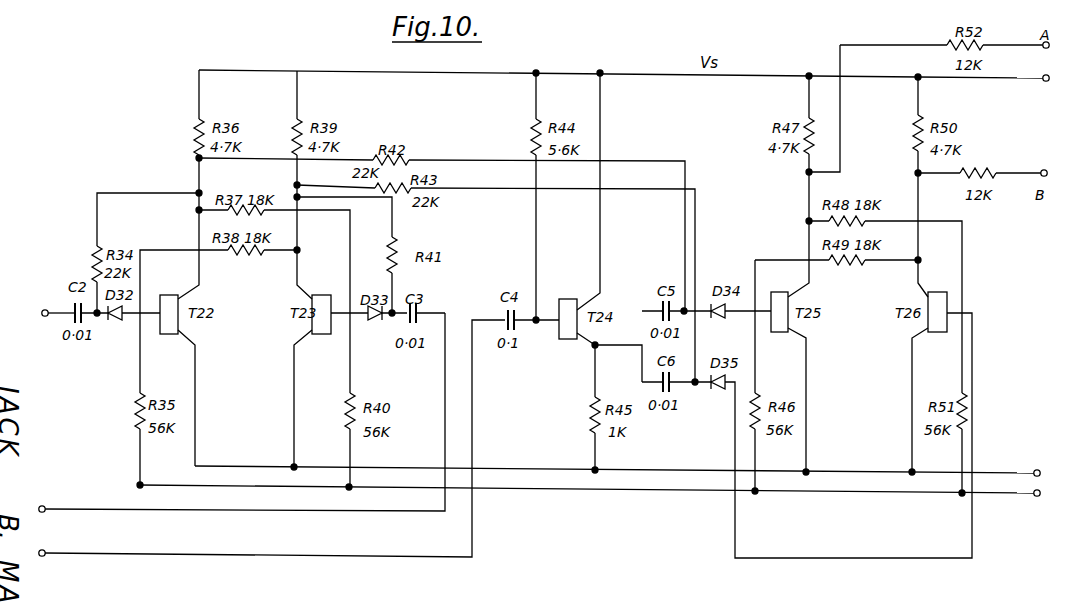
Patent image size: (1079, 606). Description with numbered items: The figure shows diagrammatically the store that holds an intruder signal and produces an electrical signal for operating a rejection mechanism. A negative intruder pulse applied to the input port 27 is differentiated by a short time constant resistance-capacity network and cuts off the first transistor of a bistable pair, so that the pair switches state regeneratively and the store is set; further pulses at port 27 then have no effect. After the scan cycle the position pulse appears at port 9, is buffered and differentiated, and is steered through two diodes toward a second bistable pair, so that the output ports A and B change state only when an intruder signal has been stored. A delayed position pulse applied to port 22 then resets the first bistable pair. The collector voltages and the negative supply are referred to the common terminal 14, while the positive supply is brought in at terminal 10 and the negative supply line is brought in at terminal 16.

The input port 27 is at (51, 314).
The port 22 is at (237, 424).
The port 9 is at (265, 450).
The supply terminal Vs 10 is at (993, 83).
The common terminal 14 is at (629, 474).
The terminal Vb 16 is at (601, 505).